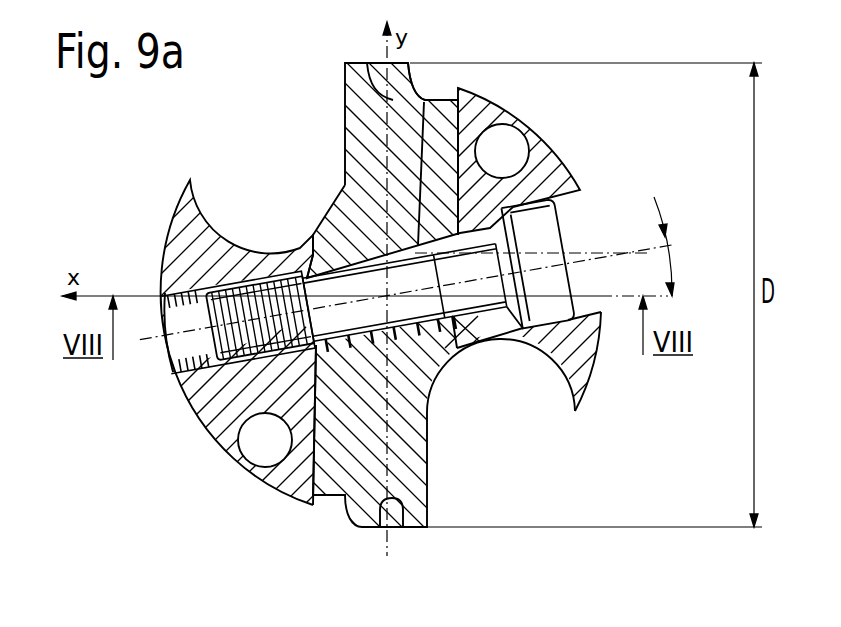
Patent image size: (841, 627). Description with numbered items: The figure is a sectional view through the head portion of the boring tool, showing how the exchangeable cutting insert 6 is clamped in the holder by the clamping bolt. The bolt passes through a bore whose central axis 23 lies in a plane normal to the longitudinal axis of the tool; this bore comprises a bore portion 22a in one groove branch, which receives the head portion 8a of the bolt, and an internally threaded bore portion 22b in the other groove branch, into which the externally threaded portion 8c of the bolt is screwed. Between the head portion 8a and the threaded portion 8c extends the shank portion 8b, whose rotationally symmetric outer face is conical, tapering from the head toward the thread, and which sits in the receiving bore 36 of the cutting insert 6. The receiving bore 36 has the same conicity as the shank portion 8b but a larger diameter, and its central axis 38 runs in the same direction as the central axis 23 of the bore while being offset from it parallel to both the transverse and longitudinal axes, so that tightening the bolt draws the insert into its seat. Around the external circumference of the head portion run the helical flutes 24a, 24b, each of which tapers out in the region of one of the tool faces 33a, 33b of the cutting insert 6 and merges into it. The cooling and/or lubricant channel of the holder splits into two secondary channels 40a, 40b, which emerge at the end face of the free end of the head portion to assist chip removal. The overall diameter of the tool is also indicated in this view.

The cutting insert 6 is at (353, 447).
The head portion 8a is at (520, 204).
The shank portion 8b is at (490, 347).
The externally threaded portion 8c is at (222, 427).
The bore portion 22a is at (597, 350).
The bore portion 22b is at (183, 345).
The central axis 23 is at (157, 343).
The flute 24a is at (473, 423).
The flute 24b is at (253, 172).
The tool face 33a is at (430, 413).
The tool face 33b is at (343, 197).
The receiving bore 36 is at (424, 102).
The central axis 38 is at (636, 257).
The secondary channel 40a is at (509, 138).
The secondary channel 40b is at (267, 440).